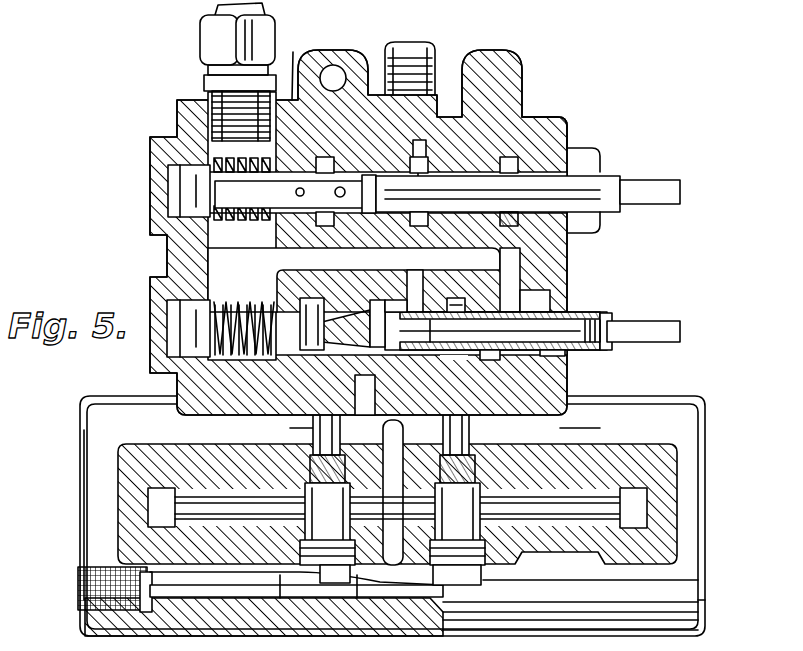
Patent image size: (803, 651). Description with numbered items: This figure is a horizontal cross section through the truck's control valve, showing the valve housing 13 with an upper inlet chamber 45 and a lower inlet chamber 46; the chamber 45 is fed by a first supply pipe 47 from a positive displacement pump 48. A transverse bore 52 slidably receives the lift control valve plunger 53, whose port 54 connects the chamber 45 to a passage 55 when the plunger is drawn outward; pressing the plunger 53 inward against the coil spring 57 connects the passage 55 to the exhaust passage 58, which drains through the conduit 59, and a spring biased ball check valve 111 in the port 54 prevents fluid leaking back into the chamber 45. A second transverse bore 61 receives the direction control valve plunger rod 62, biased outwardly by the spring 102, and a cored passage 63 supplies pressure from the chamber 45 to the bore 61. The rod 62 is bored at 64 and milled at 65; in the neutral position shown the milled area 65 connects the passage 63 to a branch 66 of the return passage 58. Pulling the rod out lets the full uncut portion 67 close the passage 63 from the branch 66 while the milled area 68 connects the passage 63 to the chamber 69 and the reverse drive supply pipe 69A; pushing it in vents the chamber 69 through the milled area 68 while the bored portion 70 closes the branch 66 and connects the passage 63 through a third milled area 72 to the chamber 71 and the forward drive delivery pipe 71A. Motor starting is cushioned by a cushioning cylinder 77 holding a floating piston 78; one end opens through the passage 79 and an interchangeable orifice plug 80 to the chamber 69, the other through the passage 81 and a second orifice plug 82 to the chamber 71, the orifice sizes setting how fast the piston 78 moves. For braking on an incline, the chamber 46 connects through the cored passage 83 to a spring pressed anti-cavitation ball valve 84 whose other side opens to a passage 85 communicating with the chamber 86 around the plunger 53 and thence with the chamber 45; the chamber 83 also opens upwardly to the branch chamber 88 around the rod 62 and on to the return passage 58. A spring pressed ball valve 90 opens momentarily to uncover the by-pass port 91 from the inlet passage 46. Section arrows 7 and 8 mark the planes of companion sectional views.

The passage 7 is at (416, 146).
The pin 8 is at (382, 182).
The valve housing 13 is at (84, 422).
The upper inlet chamber 45 is at (436, 100).
The lower inlet chamber 46 is at (570, 626).
The first supply pipe 47 is at (421, 38).
The positive displacement pump 48 is at (569, 640).
The transverse bore 52 is at (518, 116).
The lift control valve plunger 53 is at (613, 172).
The port 54 is at (318, 183).
The passage 55 is at (315, 215).
The coil spring 57 is at (250, 219).
The exhaust passage 58 is at (165, 285).
The conduit 59 is at (218, 6).
The second transverse bore 61 is at (548, 356).
The direction control valve plunger rod 62 is at (582, 318).
The cored passage 63 is at (415, 300).
The bore 64 is at (566, 337).
The milled area 65 is at (415, 294).
The branch return passage 66 is at (416, 350).
The full uncut portion 67 is at (372, 305).
The milled area 68 is at (300, 308).
The chamber 69 is at (326, 310).
The reverse drive supply pipe 69A is at (274, 310).
The unmilled bored portion 70 is at (482, 318).
The chamber 71 is at (458, 310).
The forward drive delivery pipe 71A is at (446, 328).
The third milled area 72 is at (512, 280).
The cushioning cylinder 77 is at (280, 598).
The piston 78 is at (357, 598).
The passage 79 is at (185, 508).
The interchangeable orifice plug 80 is at (327, 469).
The passage 81 is at (615, 512).
The second interchangeable orifice plug 82 is at (457, 470).
The cored passage 83 is at (587, 635).
The anti-cavitation ball valve 84 is at (746, 650).
The passage 85 is at (743, 625).
The chamber 86 is at (533, 64).
The branch chamber 88 is at (522, 300).
The spring pressed ball valve 90 is at (91, 609).
The by-pass port 91 is at (570, 631).
The spring 102 is at (218, 326).
The spring biased ball check valve 111 is at (298, 68).